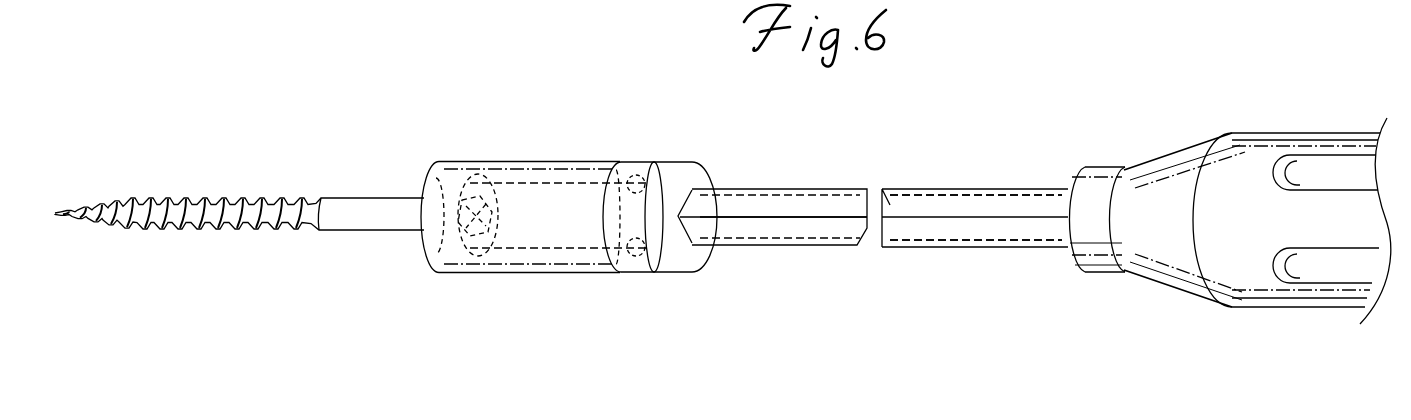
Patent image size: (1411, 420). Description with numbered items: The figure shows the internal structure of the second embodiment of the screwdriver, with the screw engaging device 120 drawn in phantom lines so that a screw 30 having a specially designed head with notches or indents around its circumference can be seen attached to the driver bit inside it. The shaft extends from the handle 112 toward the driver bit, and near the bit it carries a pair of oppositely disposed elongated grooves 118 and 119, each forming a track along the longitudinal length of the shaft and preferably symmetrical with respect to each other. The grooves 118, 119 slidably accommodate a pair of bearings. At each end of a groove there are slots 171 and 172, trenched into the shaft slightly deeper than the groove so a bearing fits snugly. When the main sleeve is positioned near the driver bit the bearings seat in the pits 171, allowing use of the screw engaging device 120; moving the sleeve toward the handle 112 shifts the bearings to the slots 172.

The screw 30 is at (217, 228).
The screw engaging device 120 is at (562, 142).
The slot 171 is at (624, 163).
The elongated groove 118 is at (792, 200).
The elongated groove 119 is at (808, 237).
The slot 172 is at (1005, 195).
The handle 112 is at (1255, 150).